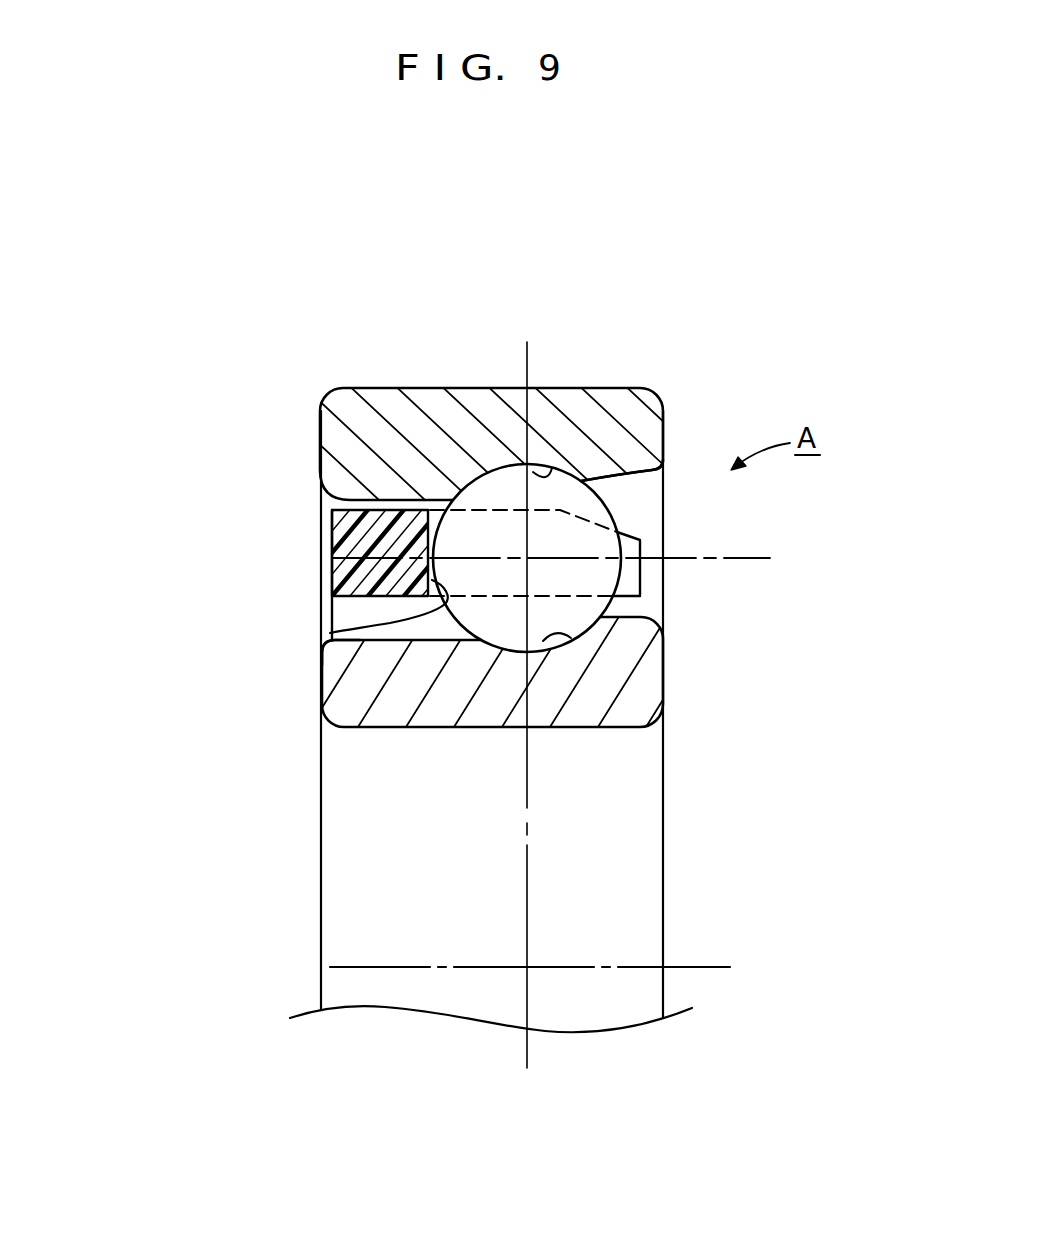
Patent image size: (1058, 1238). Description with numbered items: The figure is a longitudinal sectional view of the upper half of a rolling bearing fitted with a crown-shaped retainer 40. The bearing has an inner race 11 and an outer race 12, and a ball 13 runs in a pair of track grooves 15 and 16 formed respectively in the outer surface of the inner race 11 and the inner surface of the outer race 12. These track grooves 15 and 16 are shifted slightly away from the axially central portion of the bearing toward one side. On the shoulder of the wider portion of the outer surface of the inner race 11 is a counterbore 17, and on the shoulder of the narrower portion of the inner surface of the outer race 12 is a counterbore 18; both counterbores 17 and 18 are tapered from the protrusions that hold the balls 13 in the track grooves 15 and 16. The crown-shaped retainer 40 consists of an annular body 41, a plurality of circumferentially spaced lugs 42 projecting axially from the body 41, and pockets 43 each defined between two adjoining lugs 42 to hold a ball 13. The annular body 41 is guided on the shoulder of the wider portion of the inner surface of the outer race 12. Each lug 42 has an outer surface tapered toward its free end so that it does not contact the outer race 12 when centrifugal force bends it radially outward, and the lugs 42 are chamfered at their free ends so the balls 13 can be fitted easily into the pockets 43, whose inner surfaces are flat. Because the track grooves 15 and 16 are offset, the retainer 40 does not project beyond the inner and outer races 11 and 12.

The inner race 11 is at (460, 730).
The outer race 12 is at (507, 398).
The ball 13 is at (452, 497).
The track groove 15 is at (548, 641).
The track groove 16 is at (552, 468).
The counterbore 17 is at (325, 642).
The counterbore 18 is at (636, 481).
The crown-shaped retainer 40 is at (332, 558).
The annular body 41 is at (332, 538).
The lug 42 is at (630, 577).
The pocket 43 is at (330, 633).